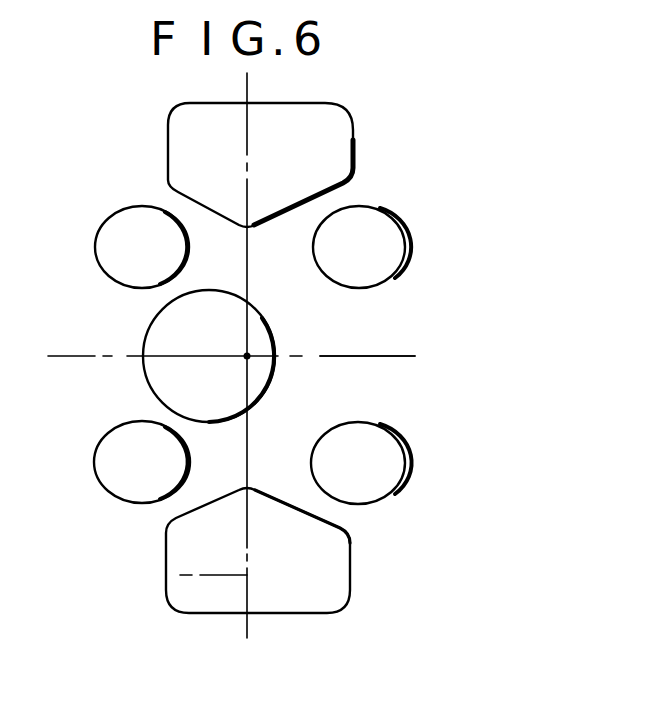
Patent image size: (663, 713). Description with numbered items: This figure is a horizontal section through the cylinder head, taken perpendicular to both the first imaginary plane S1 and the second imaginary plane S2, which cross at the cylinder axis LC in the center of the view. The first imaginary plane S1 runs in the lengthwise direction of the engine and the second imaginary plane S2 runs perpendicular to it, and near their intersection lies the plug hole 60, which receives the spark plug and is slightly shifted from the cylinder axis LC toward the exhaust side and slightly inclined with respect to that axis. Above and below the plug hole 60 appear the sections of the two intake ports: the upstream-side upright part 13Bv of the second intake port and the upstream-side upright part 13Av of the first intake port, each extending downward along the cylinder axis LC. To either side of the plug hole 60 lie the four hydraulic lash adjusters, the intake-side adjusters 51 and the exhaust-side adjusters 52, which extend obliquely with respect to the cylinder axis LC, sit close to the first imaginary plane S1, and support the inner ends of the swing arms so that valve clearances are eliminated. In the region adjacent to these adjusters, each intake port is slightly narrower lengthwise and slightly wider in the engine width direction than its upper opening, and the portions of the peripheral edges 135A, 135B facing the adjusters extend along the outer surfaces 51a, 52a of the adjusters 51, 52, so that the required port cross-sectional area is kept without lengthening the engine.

The upstream-side upright part 13Av is at (305, 495).
The upstream-side upright part 13Bv is at (312, 165).
The peripheral edge 135A is at (284, 500).
The peripheral edge 135B is at (307, 206).
The hydraulic lash adjuster 51 is at (394, 365).
The outer surface 51a is at (403, 264).
The hydraulic lash adjuster 52 is at (113, 333).
The outer surface 52a is at (138, 206).
The plug hole 60 is at (163, 330).
The cylinder axis LC is at (247, 356).
The first imaginary plane S1 is at (166, 575).
The second imaginary plane S2 is at (380, 353).